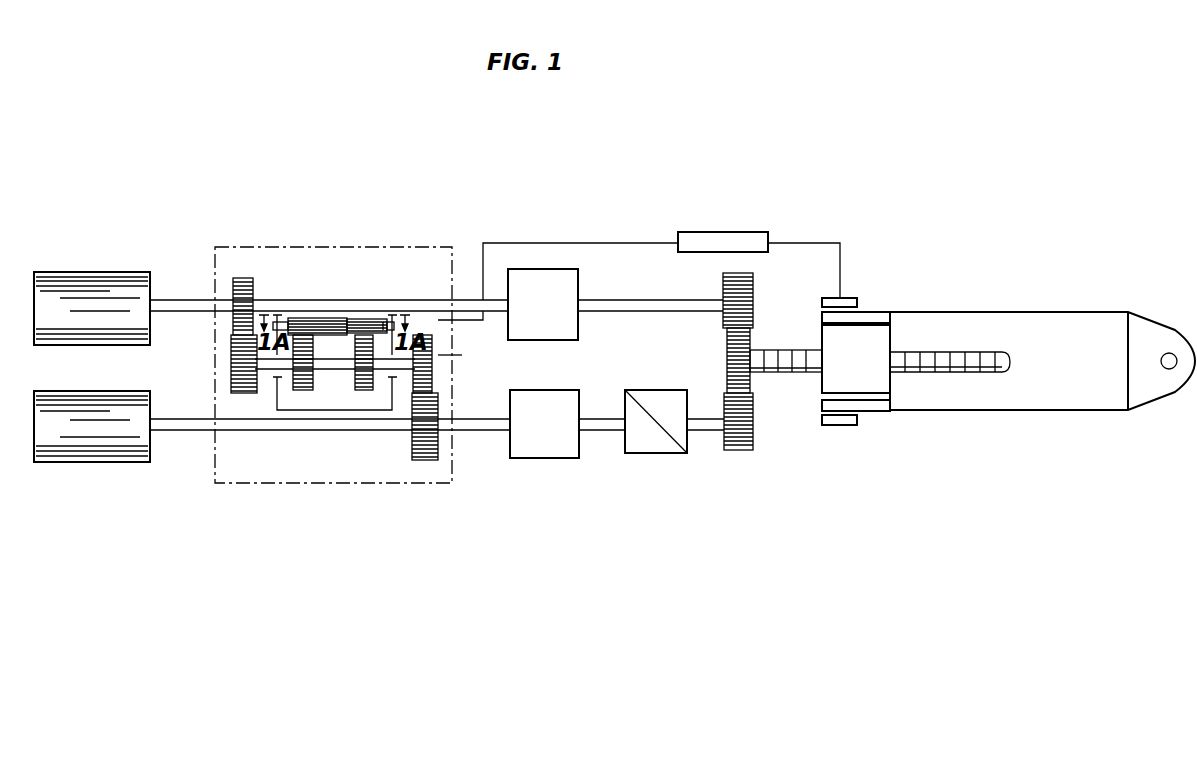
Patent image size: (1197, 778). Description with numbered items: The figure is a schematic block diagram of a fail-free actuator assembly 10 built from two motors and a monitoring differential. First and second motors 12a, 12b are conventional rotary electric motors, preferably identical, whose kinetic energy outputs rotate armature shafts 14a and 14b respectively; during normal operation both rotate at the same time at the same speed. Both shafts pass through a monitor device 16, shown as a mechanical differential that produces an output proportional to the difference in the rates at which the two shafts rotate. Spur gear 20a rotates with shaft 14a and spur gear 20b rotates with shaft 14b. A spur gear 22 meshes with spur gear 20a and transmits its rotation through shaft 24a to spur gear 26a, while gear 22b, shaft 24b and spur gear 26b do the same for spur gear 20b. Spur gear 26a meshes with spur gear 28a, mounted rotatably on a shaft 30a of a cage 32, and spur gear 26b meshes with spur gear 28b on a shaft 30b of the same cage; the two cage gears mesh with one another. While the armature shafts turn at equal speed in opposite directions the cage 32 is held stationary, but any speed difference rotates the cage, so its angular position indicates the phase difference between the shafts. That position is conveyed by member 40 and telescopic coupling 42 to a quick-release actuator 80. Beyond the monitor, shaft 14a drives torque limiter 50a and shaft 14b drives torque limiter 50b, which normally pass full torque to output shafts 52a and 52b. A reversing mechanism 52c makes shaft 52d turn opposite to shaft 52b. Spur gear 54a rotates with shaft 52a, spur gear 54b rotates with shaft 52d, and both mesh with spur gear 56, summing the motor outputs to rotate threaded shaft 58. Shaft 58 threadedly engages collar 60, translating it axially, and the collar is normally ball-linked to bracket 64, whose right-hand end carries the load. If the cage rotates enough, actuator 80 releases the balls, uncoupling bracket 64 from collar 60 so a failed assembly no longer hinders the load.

The fail-free actuator assembly 10 is at (216, 237).
The first motor 12a is at (133, 283).
The second motor 12b is at (95, 450).
The armature shaft 14a is at (192, 288).
The armature shaft 14b is at (183, 431).
The monitor device 16 is at (349, 247).
The spur gear 20a is at (248, 273).
The spur gear 20b is at (432, 460).
The spur gear 22 is at (232, 372).
The spur gear 22b is at (432, 366).
The shaft 24a is at (268, 377).
The shaft 24b is at (473, 349).
The spur gear 26a is at (308, 392).
The spur gear 26b is at (366, 392).
The spur gear 28a is at (325, 320).
The spur gear 28b is at (370, 319).
The shaft 30a is at (282, 322).
The shaft 30b is at (391, 321).
The cage 32 is at (385, 322).
The member 40 is at (512, 243).
The telescopic coupling 42 is at (716, 234).
The torque limiter 50a is at (551, 332).
The torque limiter 50b is at (542, 458).
The output shaft 52a is at (663, 300).
The output shaft 52b is at (603, 430).
The reversing mechanism 52c is at (675, 377).
The shaft 52d is at (707, 429).
The spur gear 54a is at (753, 275).
The spur gear 54b is at (755, 440).
The spur gear 56 is at (752, 380).
The threaded shaft 58 is at (985, 352).
The collar 60 is at (882, 340).
The bracket 64 is at (1097, 311).
The quick-release actuator 80 is at (855, 298).